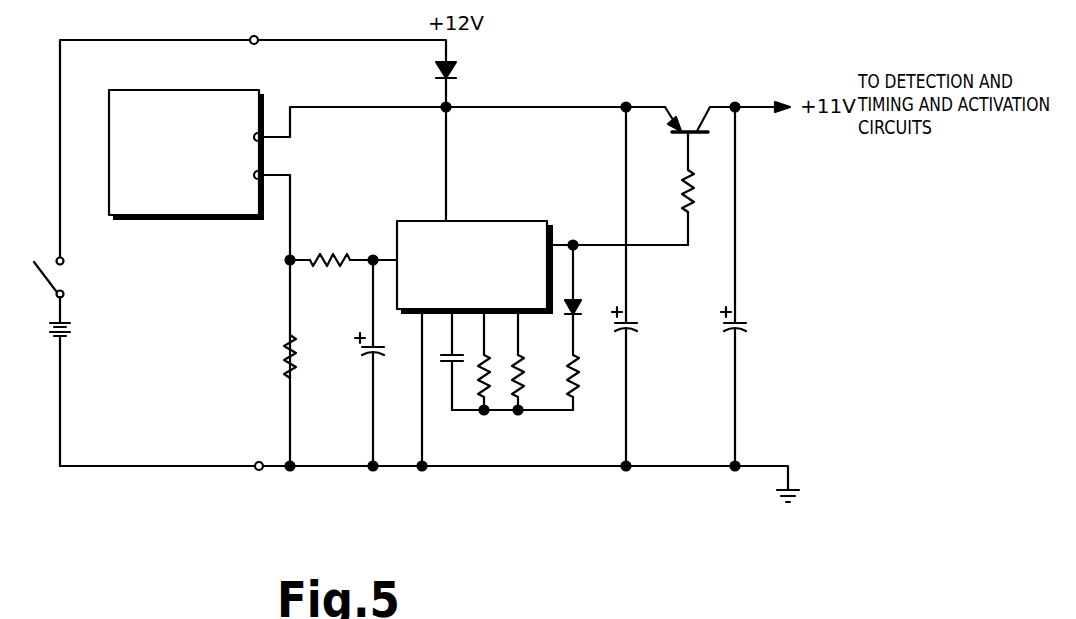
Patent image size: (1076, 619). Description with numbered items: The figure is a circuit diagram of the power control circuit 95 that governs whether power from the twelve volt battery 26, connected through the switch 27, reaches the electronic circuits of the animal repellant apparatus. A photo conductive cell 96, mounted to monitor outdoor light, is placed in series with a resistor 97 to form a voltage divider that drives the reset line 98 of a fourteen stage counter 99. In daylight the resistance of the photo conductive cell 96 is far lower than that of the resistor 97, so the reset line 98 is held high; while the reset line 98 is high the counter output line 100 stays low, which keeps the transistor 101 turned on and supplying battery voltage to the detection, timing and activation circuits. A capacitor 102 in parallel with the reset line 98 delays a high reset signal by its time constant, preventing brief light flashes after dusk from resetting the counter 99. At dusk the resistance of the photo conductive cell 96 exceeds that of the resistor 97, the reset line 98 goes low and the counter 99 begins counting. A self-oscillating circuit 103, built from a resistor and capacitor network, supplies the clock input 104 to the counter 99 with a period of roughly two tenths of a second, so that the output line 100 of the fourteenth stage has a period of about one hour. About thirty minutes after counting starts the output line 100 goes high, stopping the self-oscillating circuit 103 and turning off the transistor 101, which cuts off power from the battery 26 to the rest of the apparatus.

The battery 26 is at (50, 330).
The switch 27 is at (43, 282).
The power control circuit 95 is at (417, 475).
The photo conductive cell 96 is at (221, 223).
The resistor 97 is at (285, 353).
The reset line 98 is at (396, 255).
The 14 stage counter 99 is at (512, 220).
The counter output line 100 is at (602, 244).
The transistor 101 is at (680, 112).
The capacitor 102 is at (373, 357).
The self-oscillating circuit 103 is at (519, 412).
The input 104 is at (447, 355).